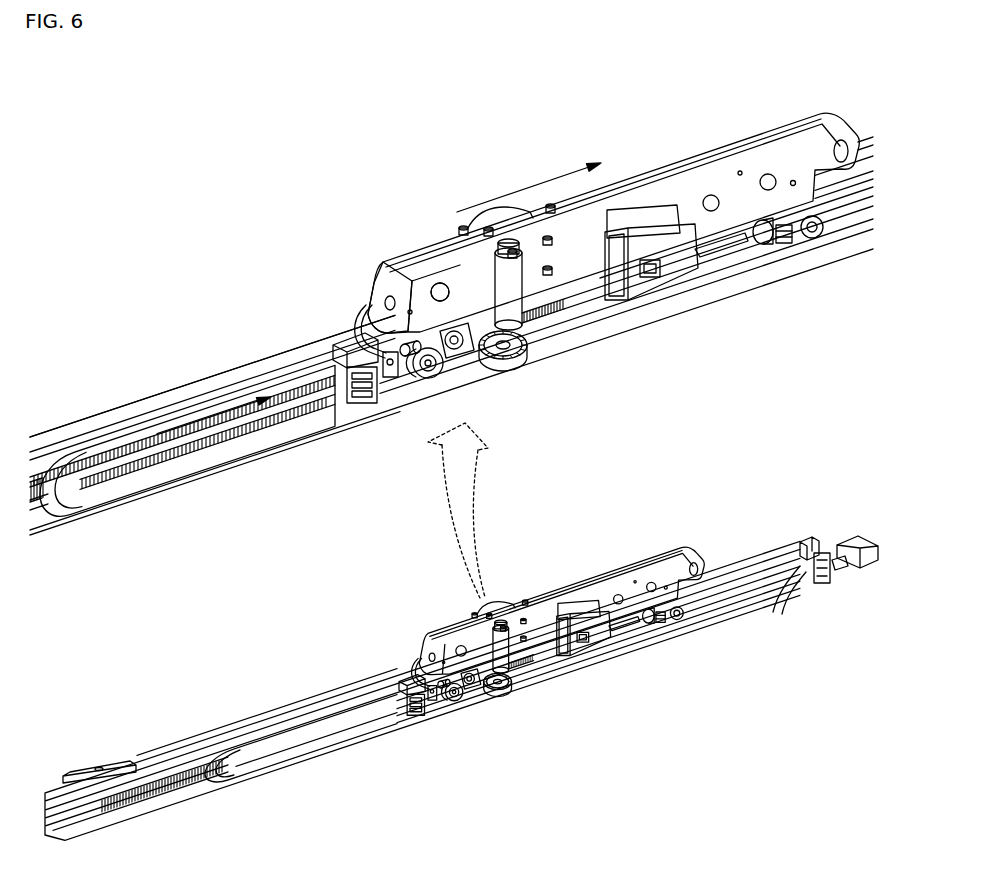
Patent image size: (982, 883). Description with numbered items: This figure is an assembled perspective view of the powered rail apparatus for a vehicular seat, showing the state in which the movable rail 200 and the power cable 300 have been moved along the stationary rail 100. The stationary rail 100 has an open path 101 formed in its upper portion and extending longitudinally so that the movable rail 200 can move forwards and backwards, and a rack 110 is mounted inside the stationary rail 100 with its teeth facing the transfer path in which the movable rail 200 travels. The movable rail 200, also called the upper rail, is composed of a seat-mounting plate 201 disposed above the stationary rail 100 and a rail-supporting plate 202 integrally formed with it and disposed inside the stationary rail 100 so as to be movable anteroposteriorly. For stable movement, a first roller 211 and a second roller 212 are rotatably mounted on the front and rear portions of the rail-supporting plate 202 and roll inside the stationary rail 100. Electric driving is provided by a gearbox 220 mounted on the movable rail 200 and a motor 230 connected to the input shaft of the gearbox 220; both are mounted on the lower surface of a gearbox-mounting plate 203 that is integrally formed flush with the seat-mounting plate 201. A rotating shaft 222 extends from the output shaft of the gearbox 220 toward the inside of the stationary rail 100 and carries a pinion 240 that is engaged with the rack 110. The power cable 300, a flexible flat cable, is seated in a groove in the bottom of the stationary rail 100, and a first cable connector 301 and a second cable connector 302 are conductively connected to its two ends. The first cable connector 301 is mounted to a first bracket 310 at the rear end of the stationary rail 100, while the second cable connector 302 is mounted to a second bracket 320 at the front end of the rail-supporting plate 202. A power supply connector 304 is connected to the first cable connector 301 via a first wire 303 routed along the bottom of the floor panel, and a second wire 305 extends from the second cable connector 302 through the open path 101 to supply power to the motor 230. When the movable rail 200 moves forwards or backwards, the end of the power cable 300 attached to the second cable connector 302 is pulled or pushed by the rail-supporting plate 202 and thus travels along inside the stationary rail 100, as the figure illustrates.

The stationary rail 100 is at (680, 313).
The open path 101 is at (277, 360).
The rack 110 is at (575, 322).
The movable rail 200 is at (680, 159).
The seat-mounting plate 201 is at (408, 263).
The rail-supporting plate 202 is at (457, 297).
The gearbox-mounting plate 203 is at (560, 237).
The first roller 211 is at (447, 372).
The second roller 212 is at (805, 246).
The gearbox 220 is at (620, 325).
The rotating shaft 222 is at (524, 338).
The motor 230 is at (698, 290).
The pinion 240 is at (508, 368).
The power cable 300 is at (254, 443).
The first cable connector 301 is at (806, 545).
The second cable connector 302 is at (327, 340).
The first wire 303 is at (846, 570).
The power supply connector 304 is at (857, 535).
The second wire 305 is at (365, 328).
The first bracket 310 is at (826, 586).
The second bracket 320 is at (383, 412).